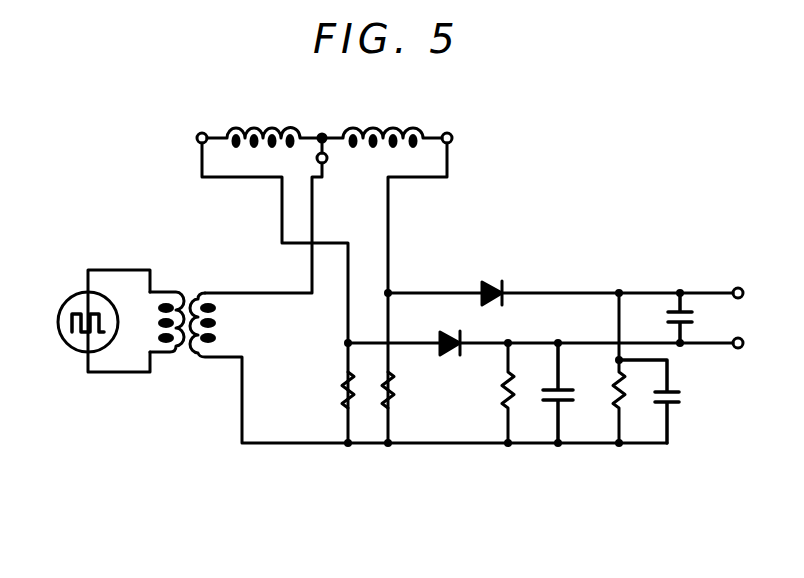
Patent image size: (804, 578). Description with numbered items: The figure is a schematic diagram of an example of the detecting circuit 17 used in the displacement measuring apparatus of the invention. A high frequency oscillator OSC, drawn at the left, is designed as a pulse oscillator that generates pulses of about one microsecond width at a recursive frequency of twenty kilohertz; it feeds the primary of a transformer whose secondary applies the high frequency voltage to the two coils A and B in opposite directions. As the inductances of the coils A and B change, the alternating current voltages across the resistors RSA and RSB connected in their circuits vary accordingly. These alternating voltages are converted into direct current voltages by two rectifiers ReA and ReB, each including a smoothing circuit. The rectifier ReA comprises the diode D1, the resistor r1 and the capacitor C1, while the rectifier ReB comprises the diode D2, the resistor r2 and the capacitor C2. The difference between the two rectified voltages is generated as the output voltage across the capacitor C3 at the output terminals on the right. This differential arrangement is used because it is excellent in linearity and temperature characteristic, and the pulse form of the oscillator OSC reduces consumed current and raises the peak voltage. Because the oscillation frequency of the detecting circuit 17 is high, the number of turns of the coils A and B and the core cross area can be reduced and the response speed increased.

The detecting circuit 17 is at (146, 221).
The coil A is at (264, 117).
The coil B is at (382, 117).
The high frequency oscillator OSC is at (62, 347).
The diode D1 is at (440, 312).
The diode D2 is at (486, 283).
The resistor RSA is at (342, 391).
The resistor RSB is at (393, 390).
The resistor r1 is at (503, 394).
The resistor r2 is at (615, 396).
The capacitor C1 is at (550, 395).
The capacitor C2 is at (680, 401).
The capacitor C3 is at (694, 322).
The rectifier ReA is at (502, 437).
The rectifier ReB is at (607, 336).